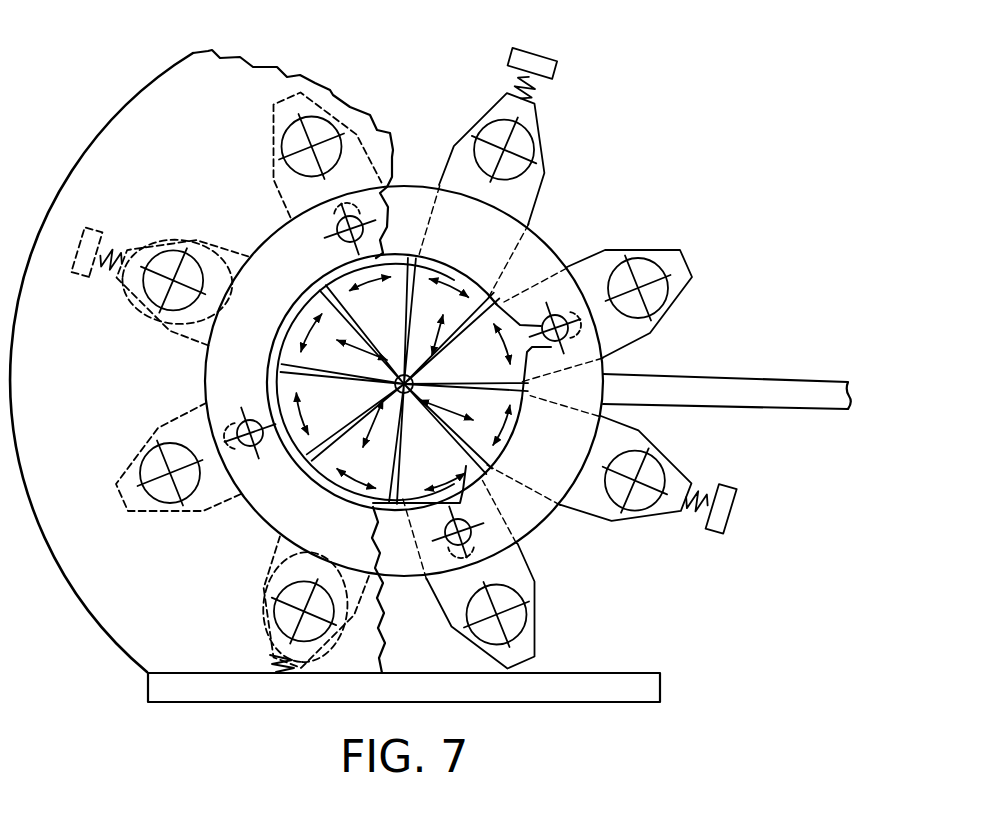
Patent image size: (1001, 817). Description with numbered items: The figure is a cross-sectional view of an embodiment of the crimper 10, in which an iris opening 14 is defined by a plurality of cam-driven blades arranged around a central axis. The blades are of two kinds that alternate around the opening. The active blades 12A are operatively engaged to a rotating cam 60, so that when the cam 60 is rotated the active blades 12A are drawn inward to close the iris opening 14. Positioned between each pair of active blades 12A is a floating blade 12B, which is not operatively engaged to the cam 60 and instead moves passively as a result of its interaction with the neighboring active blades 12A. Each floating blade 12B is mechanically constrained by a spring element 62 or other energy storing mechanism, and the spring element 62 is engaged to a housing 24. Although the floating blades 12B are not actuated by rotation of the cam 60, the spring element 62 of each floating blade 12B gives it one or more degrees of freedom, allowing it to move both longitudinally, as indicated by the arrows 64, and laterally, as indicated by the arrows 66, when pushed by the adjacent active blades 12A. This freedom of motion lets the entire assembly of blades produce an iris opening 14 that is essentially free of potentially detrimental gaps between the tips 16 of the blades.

The crimper 10 is at (410, 342).
The active blade 12A is at (682, 262).
The floating blade 12B is at (542, 171).
The iris opening 14 is at (398, 381).
The tip 16 is at (445, 382).
The housing 24 is at (529, 59).
The rotating cam 60 is at (540, 516).
The spring element 62 is at (535, 97).
The arrows indicating longitudinal movement 64 is at (375, 418).
The arrows indicating lateral movement 66 is at (303, 333).